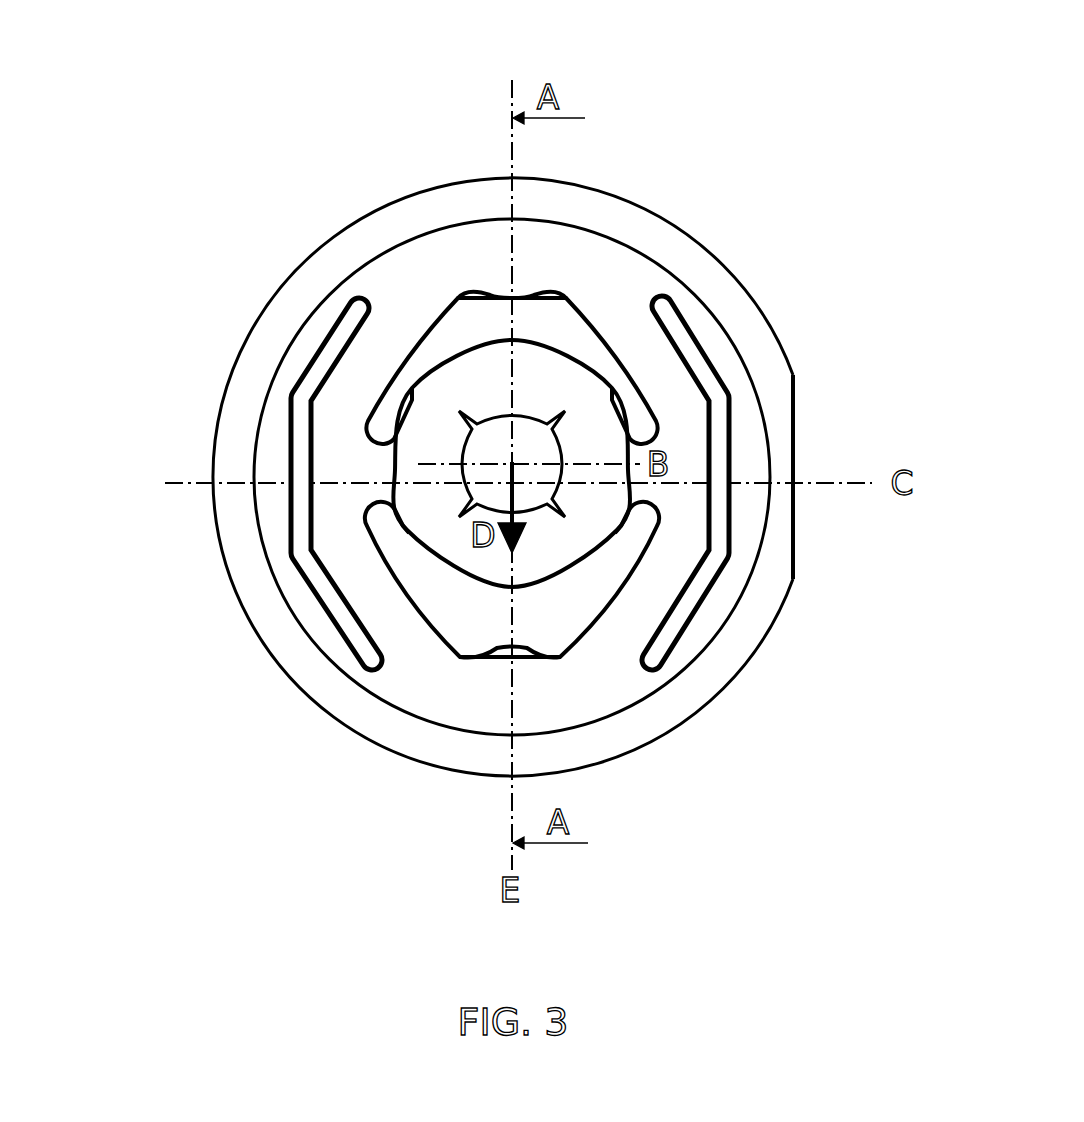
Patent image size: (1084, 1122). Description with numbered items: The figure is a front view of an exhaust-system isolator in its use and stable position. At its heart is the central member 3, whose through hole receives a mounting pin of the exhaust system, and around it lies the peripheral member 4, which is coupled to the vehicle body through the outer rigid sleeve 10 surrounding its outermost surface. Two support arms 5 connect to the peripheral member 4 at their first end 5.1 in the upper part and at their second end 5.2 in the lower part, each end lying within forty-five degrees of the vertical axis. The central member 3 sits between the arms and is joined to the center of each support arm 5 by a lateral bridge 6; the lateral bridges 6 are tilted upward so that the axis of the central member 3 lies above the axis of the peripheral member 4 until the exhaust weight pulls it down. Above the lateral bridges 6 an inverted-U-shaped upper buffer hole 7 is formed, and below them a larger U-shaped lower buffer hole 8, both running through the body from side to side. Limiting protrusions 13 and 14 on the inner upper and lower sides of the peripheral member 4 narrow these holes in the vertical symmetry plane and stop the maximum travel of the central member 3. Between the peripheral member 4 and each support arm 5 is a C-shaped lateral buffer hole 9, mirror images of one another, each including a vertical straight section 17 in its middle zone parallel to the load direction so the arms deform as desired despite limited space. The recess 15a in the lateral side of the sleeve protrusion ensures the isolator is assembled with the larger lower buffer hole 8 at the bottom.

The central member 3 is at (428, 398).
The peripheral member 4 is at (695, 310).
The support arms 5 is at (358, 592).
The first end 5.1 is at (402, 300).
The second end 5.2 is at (415, 668).
The lateral bridges 6 is at (380, 455).
The upper buffer hole 7 is at (452, 342).
The lower buffer hole 8 is at (452, 629).
The lateral buffer holes 9 is at (308, 377).
The outer rigid sleeve 10 is at (462, 203).
The limiting protrusion 13 is at (522, 293).
The limiting protrusion 14 is at (498, 650).
The recess 15a is at (797, 422).
The straight section 17 is at (300, 462).